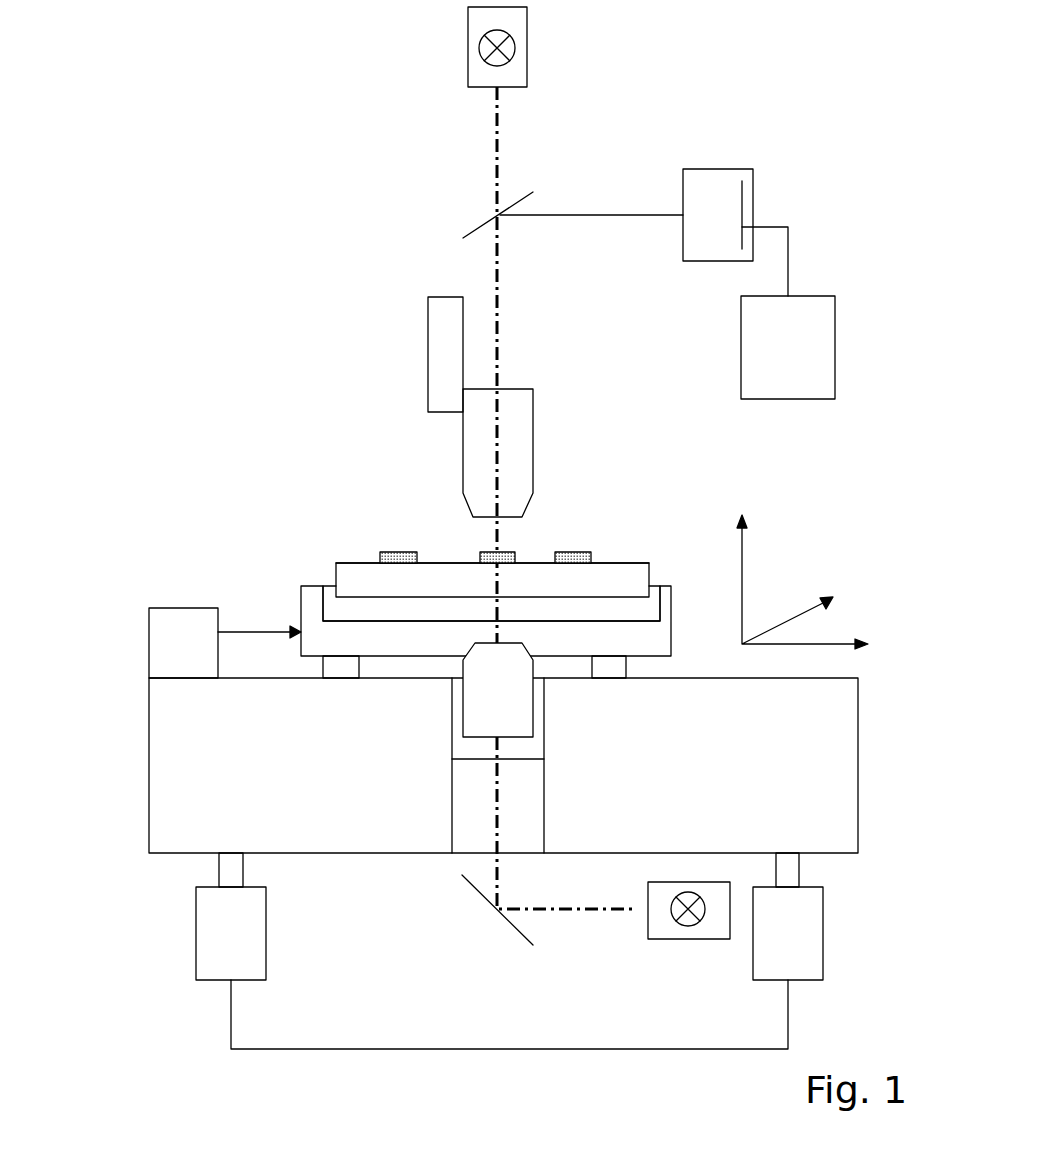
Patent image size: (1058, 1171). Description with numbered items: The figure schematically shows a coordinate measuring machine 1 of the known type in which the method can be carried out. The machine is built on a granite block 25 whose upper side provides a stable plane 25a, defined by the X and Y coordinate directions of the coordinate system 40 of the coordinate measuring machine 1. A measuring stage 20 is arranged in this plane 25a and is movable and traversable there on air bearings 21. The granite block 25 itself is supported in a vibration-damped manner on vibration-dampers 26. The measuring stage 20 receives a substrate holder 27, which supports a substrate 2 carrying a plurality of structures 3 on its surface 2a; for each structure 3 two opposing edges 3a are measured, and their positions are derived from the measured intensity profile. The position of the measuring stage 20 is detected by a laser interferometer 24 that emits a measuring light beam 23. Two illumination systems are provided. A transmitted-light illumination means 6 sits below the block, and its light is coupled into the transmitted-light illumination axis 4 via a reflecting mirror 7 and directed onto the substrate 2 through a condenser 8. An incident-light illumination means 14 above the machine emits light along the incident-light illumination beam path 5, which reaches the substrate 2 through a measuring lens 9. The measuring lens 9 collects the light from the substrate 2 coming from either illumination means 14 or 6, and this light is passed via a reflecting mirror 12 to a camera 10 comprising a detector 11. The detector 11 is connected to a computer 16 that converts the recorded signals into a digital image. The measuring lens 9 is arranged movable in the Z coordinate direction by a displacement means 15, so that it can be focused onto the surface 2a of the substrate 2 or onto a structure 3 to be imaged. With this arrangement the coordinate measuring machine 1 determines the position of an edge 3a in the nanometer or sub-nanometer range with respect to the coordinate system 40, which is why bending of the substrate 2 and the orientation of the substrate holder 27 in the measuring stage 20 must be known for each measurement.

The coordinate measuring machine 1 is at (312, 472).
The substrate 2 is at (355, 572).
The surface of substrate 2a is at (453, 562).
The structures 3 is at (510, 550).
The edges of structure 3a is at (377, 551).
The transmitted-light illumination axis 4 is at (470, 700).
The incident-light illumination beam path 5 is at (498, 352).
The transmitted-light illumination means 6 is at (672, 940).
The reflecting mirror 7 is at (524, 932).
The condenser 8 is at (478, 706).
The measuring lens 9 is at (475, 446).
The camera 10 is at (700, 262).
The detector 11 is at (744, 204).
The reflecting mirror 12 is at (483, 222).
The incident-light illumination means 14 is at (467, 38).
The displacement means 15 is at (440, 342).
The computer 16 is at (752, 352).
The measuring stage 20 is at (672, 632).
The air bearings 21 is at (347, 665).
The measuring light beam 23 is at (271, 628).
The laser interferometer 24 is at (176, 630).
The granite block 25 is at (175, 783).
The plane 25a is at (683, 677).
The vibration-dampers 26 is at (208, 946).
The substrate holder 27 is at (335, 610).
The coordinate system 40 is at (823, 644).